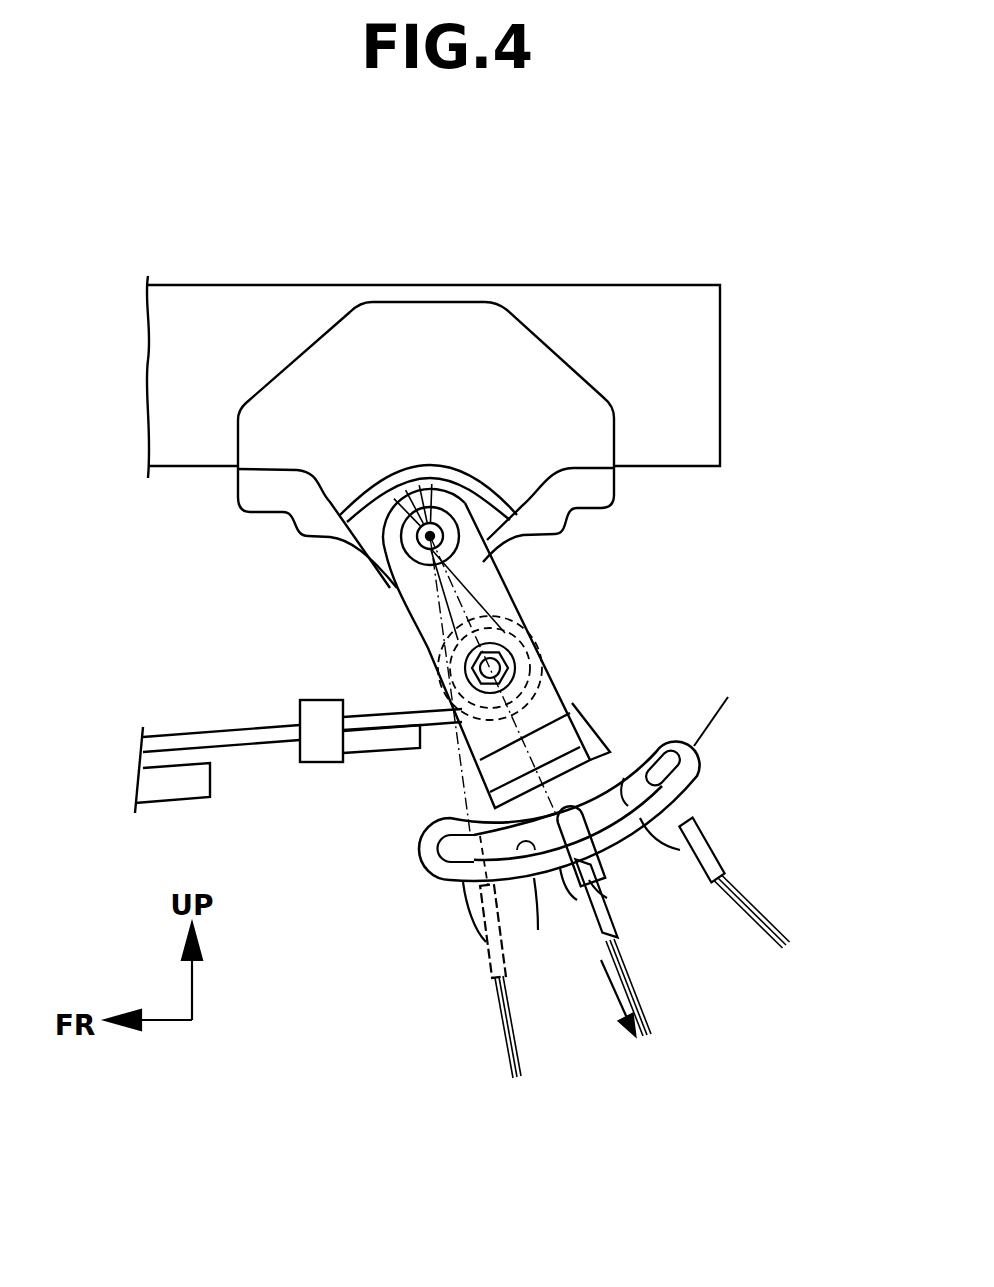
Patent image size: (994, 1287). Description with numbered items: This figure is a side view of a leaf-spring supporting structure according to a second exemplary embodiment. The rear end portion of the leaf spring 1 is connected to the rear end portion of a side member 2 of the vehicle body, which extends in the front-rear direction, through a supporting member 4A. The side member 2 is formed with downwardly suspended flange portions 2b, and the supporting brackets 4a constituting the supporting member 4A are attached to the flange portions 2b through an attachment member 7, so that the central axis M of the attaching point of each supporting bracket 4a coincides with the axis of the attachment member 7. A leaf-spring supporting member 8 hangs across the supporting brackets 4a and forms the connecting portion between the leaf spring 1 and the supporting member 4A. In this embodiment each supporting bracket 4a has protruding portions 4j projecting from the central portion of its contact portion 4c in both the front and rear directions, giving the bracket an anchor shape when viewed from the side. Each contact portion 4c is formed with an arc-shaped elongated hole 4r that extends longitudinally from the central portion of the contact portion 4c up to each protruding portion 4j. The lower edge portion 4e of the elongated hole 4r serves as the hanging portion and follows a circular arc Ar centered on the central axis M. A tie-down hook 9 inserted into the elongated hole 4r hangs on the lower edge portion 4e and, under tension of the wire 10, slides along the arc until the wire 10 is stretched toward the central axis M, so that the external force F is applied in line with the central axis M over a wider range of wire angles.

The leaf spring 1 is at (180, 725).
The side member 2 is at (636, 268).
The flange portion 2b is at (292, 432).
The supporting bracket 4a is at (490, 583).
The supporting member 4A is at (505, 818).
The contact portion 4c is at (457, 826).
The lower edge portion 4e is at (561, 886).
The protruding portion 4j is at (505, 745).
The elongated hole 4r is at (428, 848).
The attachment member 7 is at (379, 498).
The leaf-spring supporting member 8 is at (545, 624).
The tie-down hook 9 is at (485, 972).
The wire 10 is at (503, 1040).
The central axis M is at (433, 522).
The circular arc Ar is at (733, 728).
The external force F is at (609, 998).